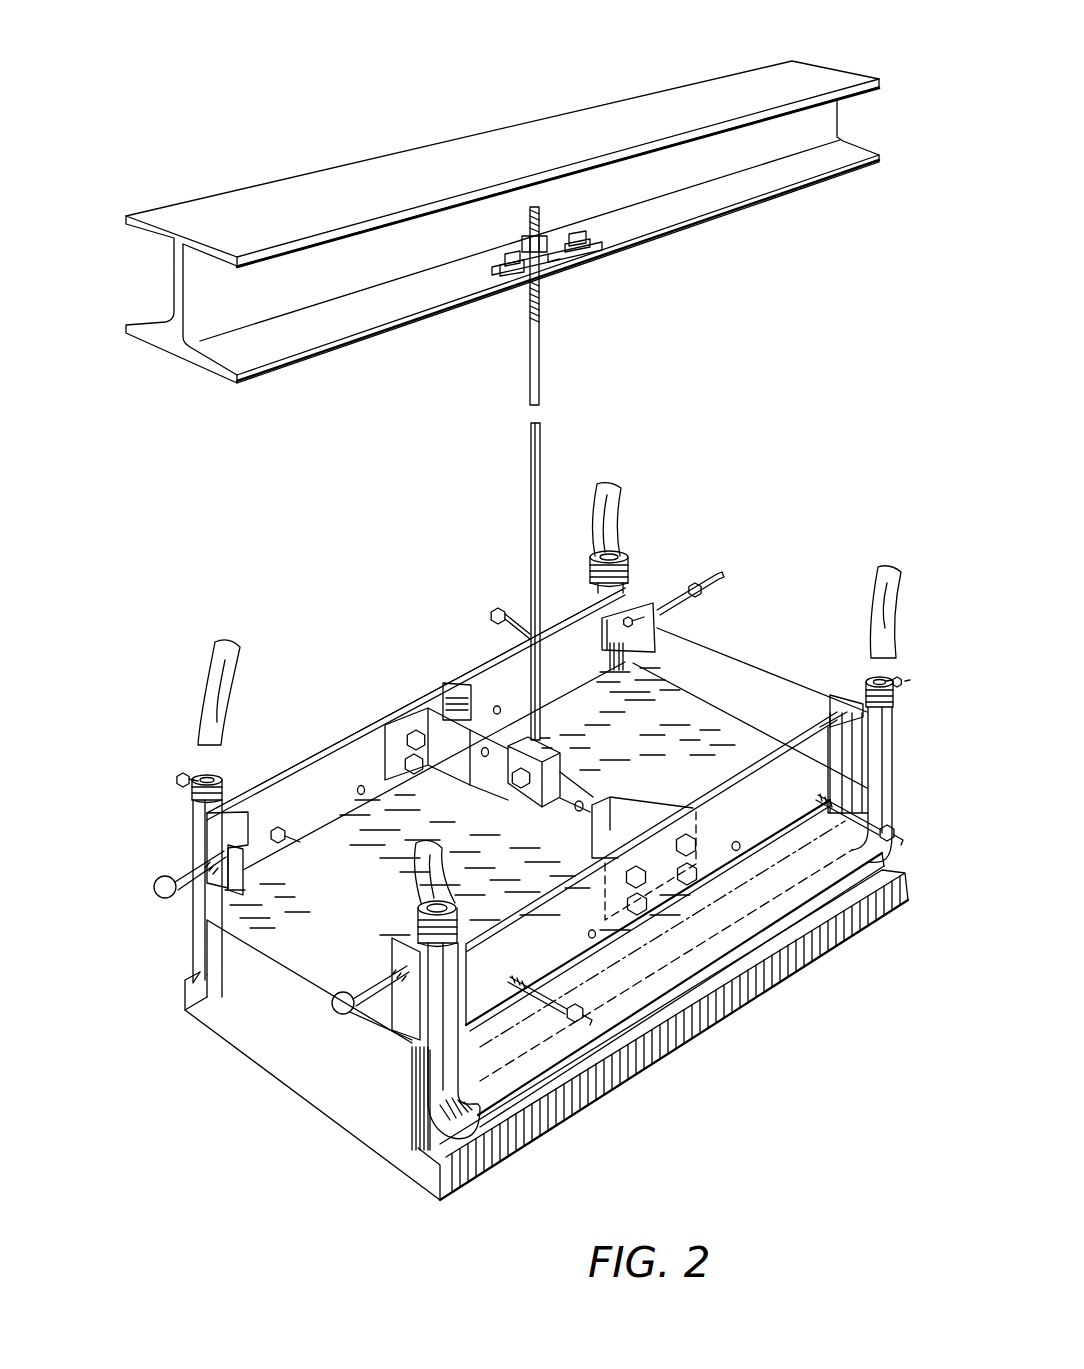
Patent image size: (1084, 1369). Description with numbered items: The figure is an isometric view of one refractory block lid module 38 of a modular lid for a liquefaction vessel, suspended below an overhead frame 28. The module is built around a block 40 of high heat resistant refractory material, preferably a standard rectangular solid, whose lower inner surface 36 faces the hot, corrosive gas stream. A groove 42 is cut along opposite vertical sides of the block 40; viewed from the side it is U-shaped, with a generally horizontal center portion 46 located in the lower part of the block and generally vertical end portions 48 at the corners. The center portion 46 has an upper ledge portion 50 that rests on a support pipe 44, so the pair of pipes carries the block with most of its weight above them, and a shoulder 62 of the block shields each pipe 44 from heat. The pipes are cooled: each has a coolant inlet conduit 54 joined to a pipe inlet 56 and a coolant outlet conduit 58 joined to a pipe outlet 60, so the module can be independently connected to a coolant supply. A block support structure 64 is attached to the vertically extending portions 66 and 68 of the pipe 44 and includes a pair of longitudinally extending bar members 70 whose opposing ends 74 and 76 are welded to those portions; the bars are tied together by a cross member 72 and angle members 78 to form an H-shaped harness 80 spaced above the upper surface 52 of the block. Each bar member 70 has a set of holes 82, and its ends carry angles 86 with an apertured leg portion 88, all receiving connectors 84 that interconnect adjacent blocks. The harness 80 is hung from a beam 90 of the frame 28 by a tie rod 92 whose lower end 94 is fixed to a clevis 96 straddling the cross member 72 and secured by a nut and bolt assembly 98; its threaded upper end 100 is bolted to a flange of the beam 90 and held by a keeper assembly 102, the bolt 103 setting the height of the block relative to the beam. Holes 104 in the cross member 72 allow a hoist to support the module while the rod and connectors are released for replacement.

The overhead frame 28 is at (235, 188).
The beam 90 is at (653, 93).
The upper end 100 is at (542, 305).
The keeper assembly 102 is at (602, 242).
The bolt 103 is at (520, 242).
The tie rod 92 is at (541, 437).
The lid module 38 is at (773, 527).
The coolant outlet conduit 58 is at (622, 502).
The pipe outlet 60 is at (593, 587).
The vertically extending portion 68 is at (625, 657).
The coolant inlet conduit 54 is at (199, 702).
The pipe inlet 56 is at (195, 798).
The vertically extending portion 66 is at (195, 823).
The block support structure 64 is at (350, 737).
The end 74 is at (252, 790).
The end 76 is at (588, 603).
The bar member 70 is at (732, 787).
The upper surface 52 is at (700, 713).
The block 40 is at (267, 1050).
The groove 42 is at (195, 977).
The shoulder 62 is at (187, 1003).
The end portion 48 is at (420, 1083).
The inner surface 36 is at (570, 1115).
The support pipe 44 is at (785, 937).
The center portion 46 is at (728, 978).
The upper ledge portion 50 is at (650, 1047).
The angle member 78 is at (443, 680).
The cross member 72 is at (492, 793).
The nut and bolt assembly 98 is at (517, 787).
The hole 104 is at (578, 807).
The lower end 94 is at (545, 738).
The clevis 96 is at (547, 748).
The H-shaped harness 80 is at (613, 771).
The hole 82 is at (359, 794).
The angle 86 is at (637, 608).
The apertured leg portion 88 is at (657, 623).
The connector 84 is at (492, 612).